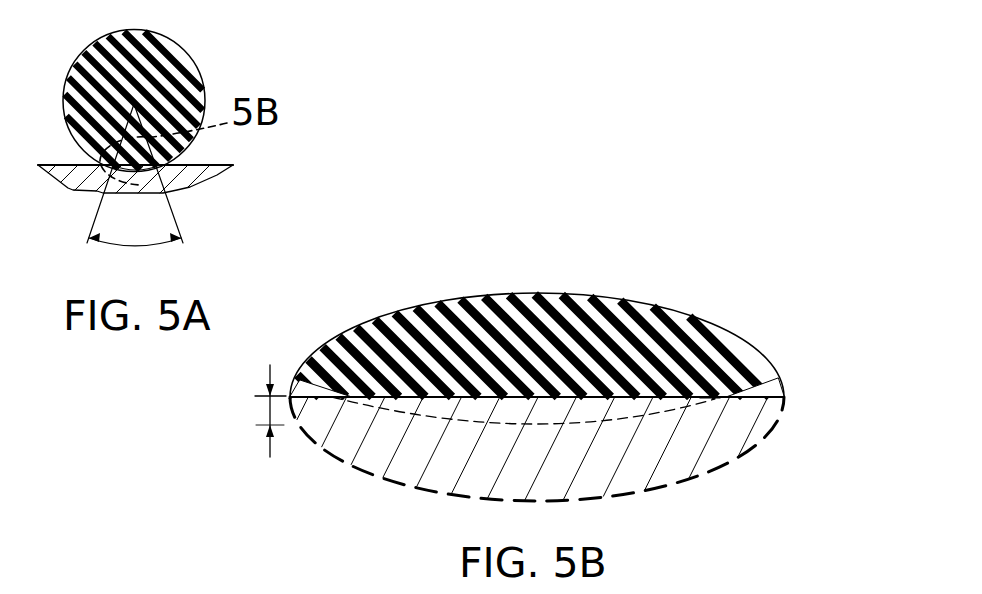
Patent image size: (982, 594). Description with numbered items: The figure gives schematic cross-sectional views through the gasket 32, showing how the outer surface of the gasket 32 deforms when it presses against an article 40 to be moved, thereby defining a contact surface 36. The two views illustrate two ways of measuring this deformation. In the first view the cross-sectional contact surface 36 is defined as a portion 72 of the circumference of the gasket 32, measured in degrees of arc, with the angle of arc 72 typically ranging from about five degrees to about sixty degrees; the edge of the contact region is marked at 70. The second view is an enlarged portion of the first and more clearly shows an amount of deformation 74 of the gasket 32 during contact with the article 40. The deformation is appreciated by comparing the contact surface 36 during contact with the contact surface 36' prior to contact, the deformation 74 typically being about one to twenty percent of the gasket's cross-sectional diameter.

In FIG. 5A, the gasket 32 is at (87, 57).
In FIG. 5B, the gasket 32 is at (598, 312).
In FIG. 5A, the article to be moved 40 is at (50, 168).
In FIG. 5B, the article to be moved 40 is at (368, 462).
In FIG. 5A, the contact surface 36 is at (136, 199).
In FIG. 5B, the contact surface 36 is at (537, 430).
In FIG. 5B, the contact surface prior to contact 36' is at (523, 444).
In FIG. 5A, the contact edge 70 is at (115, 178).
In FIG. 5B, the contact edge 70 is at (695, 405).
In FIG. 5A, the portion of the circumference (angle of arc) 72 is at (130, 244).
In FIG. 5B, the amount of deformation 74 is at (268, 410).